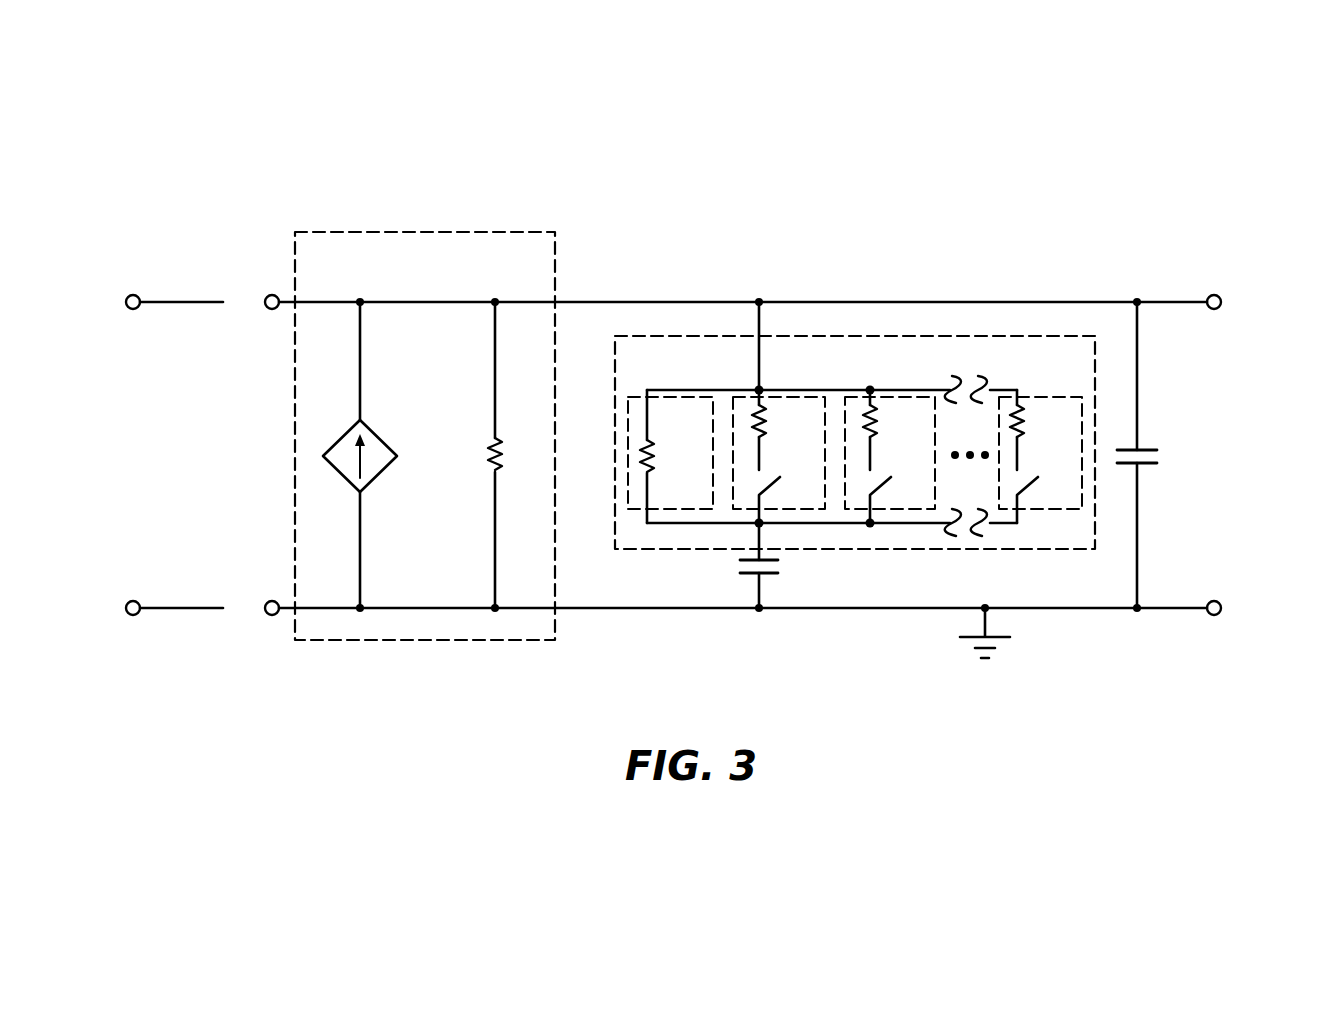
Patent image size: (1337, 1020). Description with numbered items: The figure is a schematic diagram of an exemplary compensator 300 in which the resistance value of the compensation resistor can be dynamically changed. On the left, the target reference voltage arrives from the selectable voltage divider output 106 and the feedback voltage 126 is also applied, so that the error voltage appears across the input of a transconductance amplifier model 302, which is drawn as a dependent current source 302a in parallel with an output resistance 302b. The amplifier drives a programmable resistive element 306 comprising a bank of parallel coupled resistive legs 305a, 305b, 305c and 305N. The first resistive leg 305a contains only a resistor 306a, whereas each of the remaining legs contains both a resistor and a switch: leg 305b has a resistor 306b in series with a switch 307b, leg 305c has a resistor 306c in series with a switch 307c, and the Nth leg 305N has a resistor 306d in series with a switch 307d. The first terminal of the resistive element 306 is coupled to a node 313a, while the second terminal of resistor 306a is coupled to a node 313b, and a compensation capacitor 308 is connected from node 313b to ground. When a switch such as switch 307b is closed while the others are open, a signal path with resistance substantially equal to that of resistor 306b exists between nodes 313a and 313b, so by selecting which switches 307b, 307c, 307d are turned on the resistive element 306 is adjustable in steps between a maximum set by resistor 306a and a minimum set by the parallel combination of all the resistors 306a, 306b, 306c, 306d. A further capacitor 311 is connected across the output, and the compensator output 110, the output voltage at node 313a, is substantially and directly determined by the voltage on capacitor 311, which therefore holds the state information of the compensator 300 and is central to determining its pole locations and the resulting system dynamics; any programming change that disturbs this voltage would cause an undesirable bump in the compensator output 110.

The compensator 300 is at (296, 180).
The output of selectable voltage divider 106 is at (135, 293).
The feedback voltage 126 is at (133, 615).
The transconductance amplifier model 302 is at (346, 267).
The dependent current source gmVerr 302a is at (378, 437).
The output resistance Ro 302b is at (493, 467).
The resistive leg 305a is at (642, 397).
The resistive leg 305b is at (807, 512).
The resistive leg 305c is at (850, 398).
The resistive leg 305N is at (1067, 510).
The programmable resistive element 306 is at (1073, 337).
The resistor 306a is at (643, 468).
The resistor 306b is at (768, 397).
The resistor 306c is at (880, 400).
The resistor 306d is at (1020, 397).
The switch 307b is at (773, 495).
The switch 307c is at (885, 495).
The switch 307d is at (1030, 495).
The capacitor 308 is at (745, 577).
The capacitor 311 is at (1150, 443).
The node 313a is at (757, 388).
The node 313b is at (756, 526).
The compensator output 110 is at (1288, 445).